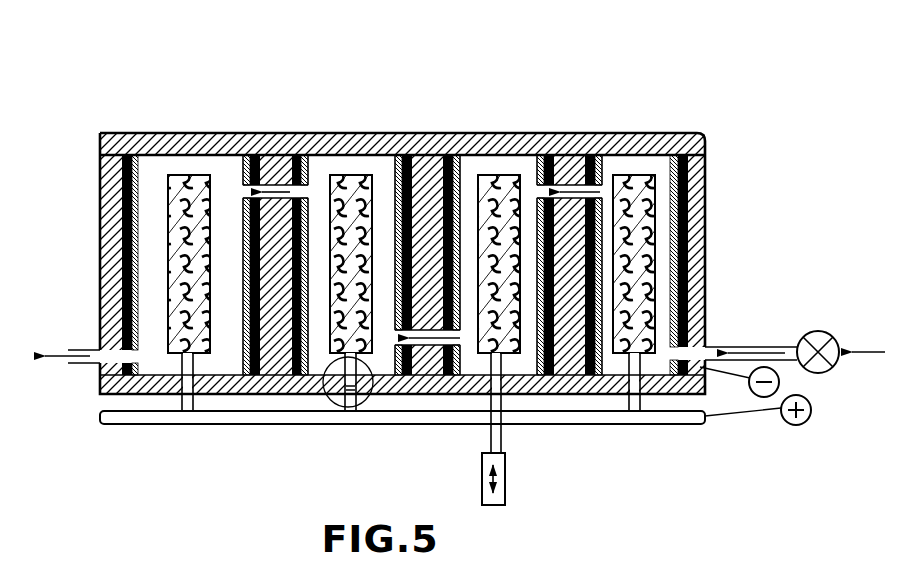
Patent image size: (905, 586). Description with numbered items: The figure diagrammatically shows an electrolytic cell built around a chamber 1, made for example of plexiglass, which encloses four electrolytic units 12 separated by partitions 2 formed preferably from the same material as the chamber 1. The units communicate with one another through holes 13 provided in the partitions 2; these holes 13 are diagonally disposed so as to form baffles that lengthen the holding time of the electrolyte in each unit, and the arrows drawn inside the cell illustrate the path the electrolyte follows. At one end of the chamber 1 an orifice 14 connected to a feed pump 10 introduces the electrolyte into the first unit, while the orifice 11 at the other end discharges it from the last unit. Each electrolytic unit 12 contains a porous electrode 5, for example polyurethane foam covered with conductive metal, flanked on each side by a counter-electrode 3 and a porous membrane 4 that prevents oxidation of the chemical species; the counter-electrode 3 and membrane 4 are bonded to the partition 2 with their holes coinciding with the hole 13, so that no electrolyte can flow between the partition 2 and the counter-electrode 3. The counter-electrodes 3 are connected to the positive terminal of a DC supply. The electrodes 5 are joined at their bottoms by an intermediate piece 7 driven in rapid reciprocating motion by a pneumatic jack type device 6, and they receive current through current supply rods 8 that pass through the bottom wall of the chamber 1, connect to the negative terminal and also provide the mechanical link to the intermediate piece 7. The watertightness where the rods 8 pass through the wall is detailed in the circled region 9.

The chamber 1 is at (724, 164).
The partition 2 is at (107, 133).
The counter-electrode 3 is at (122, 133).
The porous membrane 4 is at (133, 133).
The porous electrode 5 is at (187, 175).
The pneumatic jack type device 6 is at (508, 498).
The intermediate piece 7 is at (223, 418).
The current supply rod 8 is at (347, 415).
The detail circle 9 is at (328, 402).
The feed pump 10 is at (830, 331).
The discharge orifice 11 is at (50, 350).
The electrolytic unit 12 is at (150, 178).
The hole 13 is at (245, 191).
The feed orifice 14 is at (712, 352).